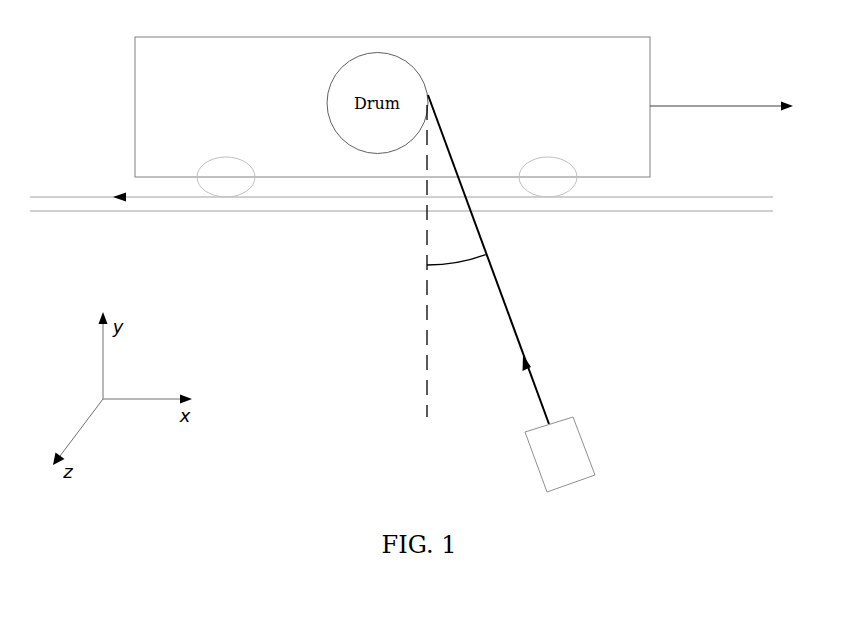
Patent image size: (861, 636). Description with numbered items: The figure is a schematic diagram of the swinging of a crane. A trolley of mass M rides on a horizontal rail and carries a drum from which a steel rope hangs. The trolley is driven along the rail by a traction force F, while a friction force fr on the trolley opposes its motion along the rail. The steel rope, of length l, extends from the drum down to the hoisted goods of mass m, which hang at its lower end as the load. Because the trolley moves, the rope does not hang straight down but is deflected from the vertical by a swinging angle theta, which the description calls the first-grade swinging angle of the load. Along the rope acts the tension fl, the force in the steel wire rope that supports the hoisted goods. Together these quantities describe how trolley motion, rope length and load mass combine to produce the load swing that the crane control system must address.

The mass of the trolley M is at (392, 100).
The traction on the trolley F is at (725, 124).
The friction on the trolley fr is at (110, 178).
The length of the steel rope l is at (488, 259).
The swinging angle of the load theta is at (456, 284).
The tension on the steel wire rope fl is at (543, 361).
The mass of the hoisted goods m is at (573, 454).